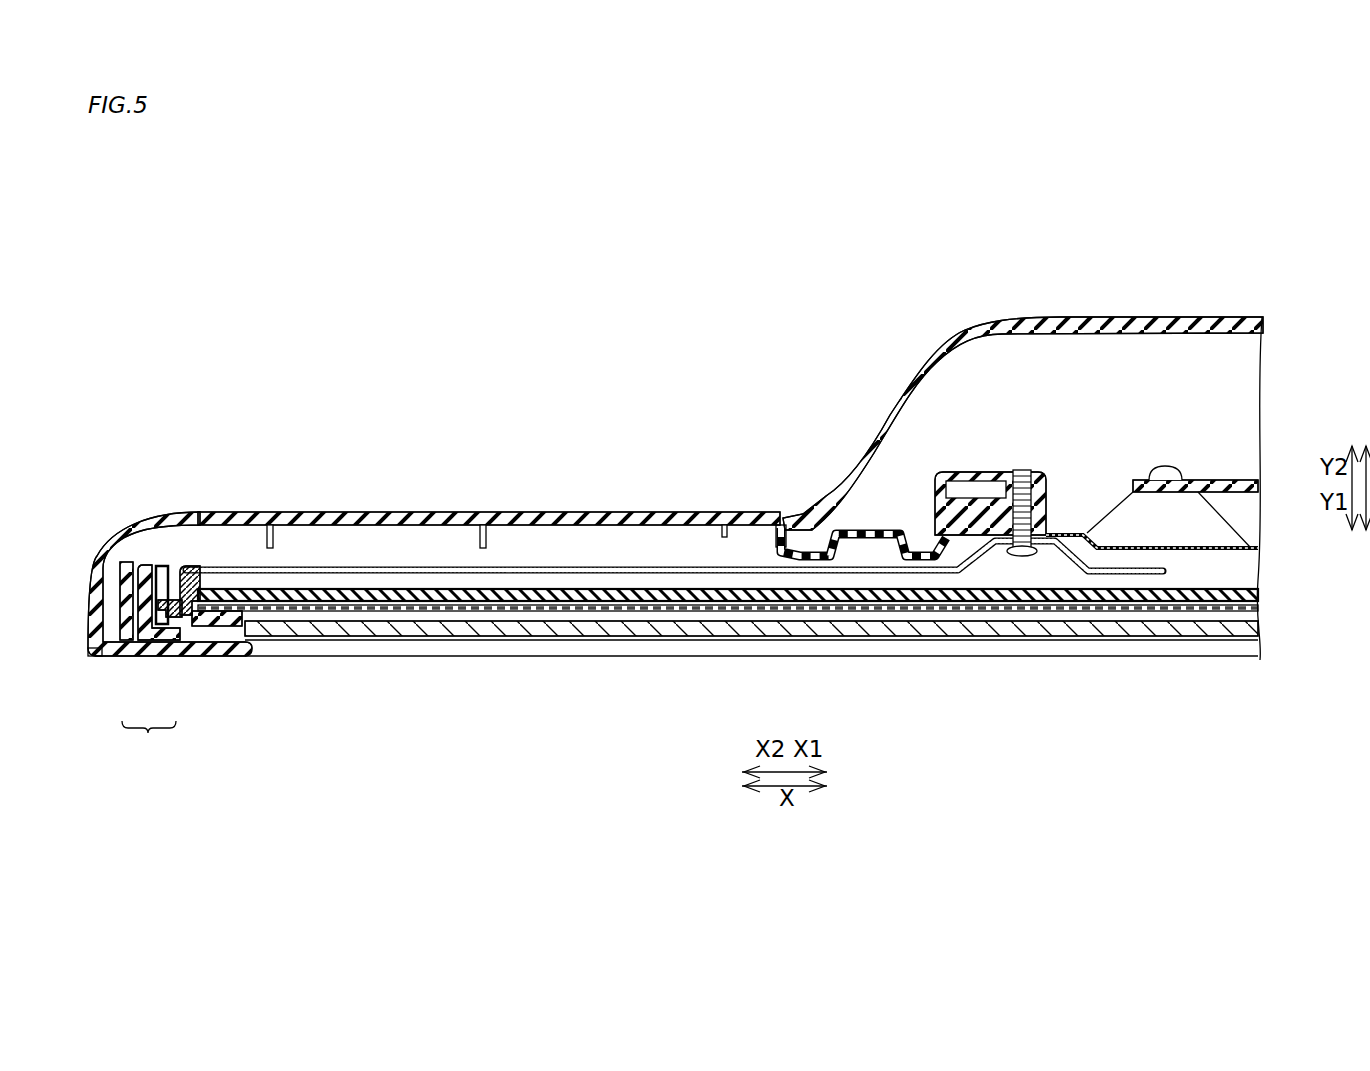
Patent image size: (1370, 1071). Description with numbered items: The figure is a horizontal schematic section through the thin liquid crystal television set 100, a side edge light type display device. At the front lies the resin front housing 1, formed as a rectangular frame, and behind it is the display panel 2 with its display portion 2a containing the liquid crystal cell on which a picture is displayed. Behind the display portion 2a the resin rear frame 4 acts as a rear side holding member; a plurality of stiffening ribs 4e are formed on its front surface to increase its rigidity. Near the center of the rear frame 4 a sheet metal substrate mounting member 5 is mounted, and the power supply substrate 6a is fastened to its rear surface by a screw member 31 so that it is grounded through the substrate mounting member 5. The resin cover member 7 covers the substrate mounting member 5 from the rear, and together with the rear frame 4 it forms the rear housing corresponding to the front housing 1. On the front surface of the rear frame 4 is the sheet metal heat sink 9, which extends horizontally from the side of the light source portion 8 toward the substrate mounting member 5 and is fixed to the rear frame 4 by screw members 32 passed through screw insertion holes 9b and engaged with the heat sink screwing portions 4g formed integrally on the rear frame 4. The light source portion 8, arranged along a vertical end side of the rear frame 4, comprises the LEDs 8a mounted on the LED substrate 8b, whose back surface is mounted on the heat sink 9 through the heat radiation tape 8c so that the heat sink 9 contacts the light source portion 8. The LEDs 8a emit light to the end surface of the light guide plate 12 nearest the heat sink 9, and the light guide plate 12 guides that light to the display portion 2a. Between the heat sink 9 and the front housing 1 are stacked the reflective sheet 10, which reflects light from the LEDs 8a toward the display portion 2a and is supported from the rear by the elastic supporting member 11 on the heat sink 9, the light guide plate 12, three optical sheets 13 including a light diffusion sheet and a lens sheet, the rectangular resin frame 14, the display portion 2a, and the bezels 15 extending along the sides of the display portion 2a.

The liquid crystal television set 100 is at (258, 280).
The display panel 2 is at (103, 540).
The display portion 2a is at (480, 625).
The rear frame 4 is at (335, 520).
The stiffening ribs 4e is at (270, 525).
The heat sink screwing portions 4g is at (1019, 470).
The substrate mounting member 5 is at (1120, 546).
The power supply substrate 6a is at (1205, 490).
The cover member 7 is at (1172, 326).
The light source portion 8 is at (149, 739).
The LEDs 8a is at (166, 625).
The LED substrate 8b is at (150, 640).
The heat radiation tape 8c is at (126, 641).
The heat sink 9 is at (700, 567).
The screw insertion holes 9b is at (1019, 552).
The reflective sheet 10 is at (237, 600).
The elastic supporting member 11 is at (425, 590).
The light guide plate 12 is at (478, 603).
The optical sheets 13 is at (305, 600).
The resin frame 14 is at (228, 626).
The bezels 15 is at (180, 612).
The front housing 1 is at (98, 648).
The screw members 31 is at (1164, 465).
The screw members 32 is at (1020, 470).